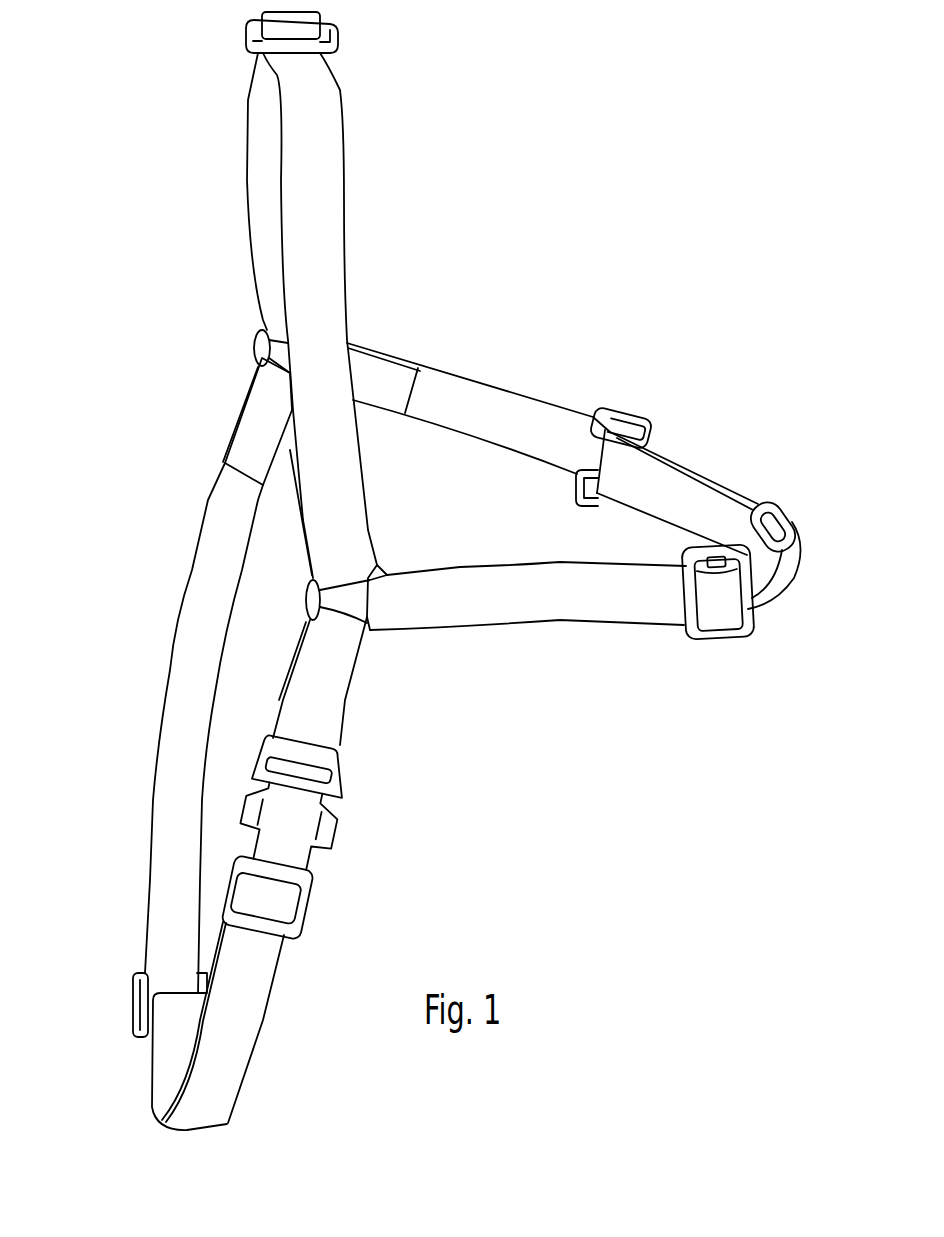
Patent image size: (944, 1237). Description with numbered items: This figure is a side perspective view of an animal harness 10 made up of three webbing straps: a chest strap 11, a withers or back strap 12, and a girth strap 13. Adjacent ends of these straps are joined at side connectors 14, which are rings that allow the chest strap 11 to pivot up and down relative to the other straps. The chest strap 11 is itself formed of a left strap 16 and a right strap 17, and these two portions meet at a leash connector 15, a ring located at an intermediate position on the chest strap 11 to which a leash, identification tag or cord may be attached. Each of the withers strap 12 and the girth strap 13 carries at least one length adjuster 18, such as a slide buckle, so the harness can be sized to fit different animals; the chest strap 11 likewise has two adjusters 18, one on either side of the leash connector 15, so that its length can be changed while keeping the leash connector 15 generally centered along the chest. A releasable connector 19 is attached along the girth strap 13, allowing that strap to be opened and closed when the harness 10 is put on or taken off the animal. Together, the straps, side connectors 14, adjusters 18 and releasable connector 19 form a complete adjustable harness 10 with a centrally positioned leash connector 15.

The animal harness 10 is at (425, 284).
The chest strap 11 is at (695, 478).
The withers strap 12 is at (342, 190).
The girth strap 13 is at (173, 680).
The side connector 14 is at (254, 347).
The leash connector 15 is at (781, 510).
The left strap 16 is at (502, 398).
The right strap 17 is at (522, 565).
The length adjuster 18 is at (338, 38).
The releasable connector 19 is at (326, 832).